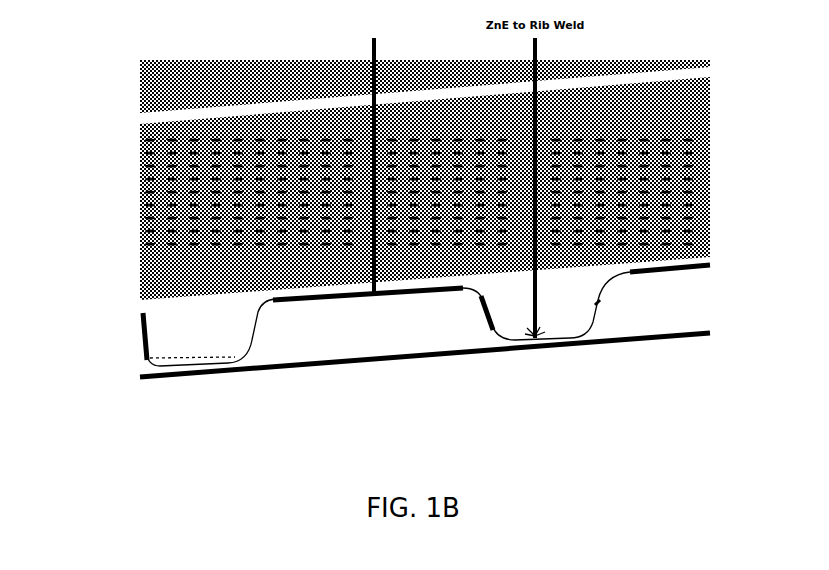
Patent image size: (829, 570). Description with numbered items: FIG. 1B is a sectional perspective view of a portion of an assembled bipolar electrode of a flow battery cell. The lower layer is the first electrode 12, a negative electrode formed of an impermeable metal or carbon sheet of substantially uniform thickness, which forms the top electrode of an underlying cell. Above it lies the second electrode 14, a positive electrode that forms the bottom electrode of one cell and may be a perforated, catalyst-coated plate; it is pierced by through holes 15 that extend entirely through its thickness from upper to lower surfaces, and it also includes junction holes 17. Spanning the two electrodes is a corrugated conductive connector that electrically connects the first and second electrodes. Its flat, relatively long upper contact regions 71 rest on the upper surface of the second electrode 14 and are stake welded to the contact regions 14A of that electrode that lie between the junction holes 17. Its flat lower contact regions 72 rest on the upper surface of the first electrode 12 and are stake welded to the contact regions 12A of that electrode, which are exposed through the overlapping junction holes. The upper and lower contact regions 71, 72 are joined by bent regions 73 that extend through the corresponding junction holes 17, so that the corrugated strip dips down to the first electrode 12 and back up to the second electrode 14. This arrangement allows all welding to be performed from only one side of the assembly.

The first electrode 12 is at (303, 357).
The contact regions of the first electrode 12A is at (558, 343).
The second electrode 14 is at (703, 143).
The contact regions of the second electrode 14A is at (418, 291).
The through holes 15 is at (682, 223).
The junction holes 17 is at (605, 80).
The upper contact regions 71 is at (348, 297).
The lower contact regions 72 is at (202, 357).
The bent regions 73 is at (598, 307).